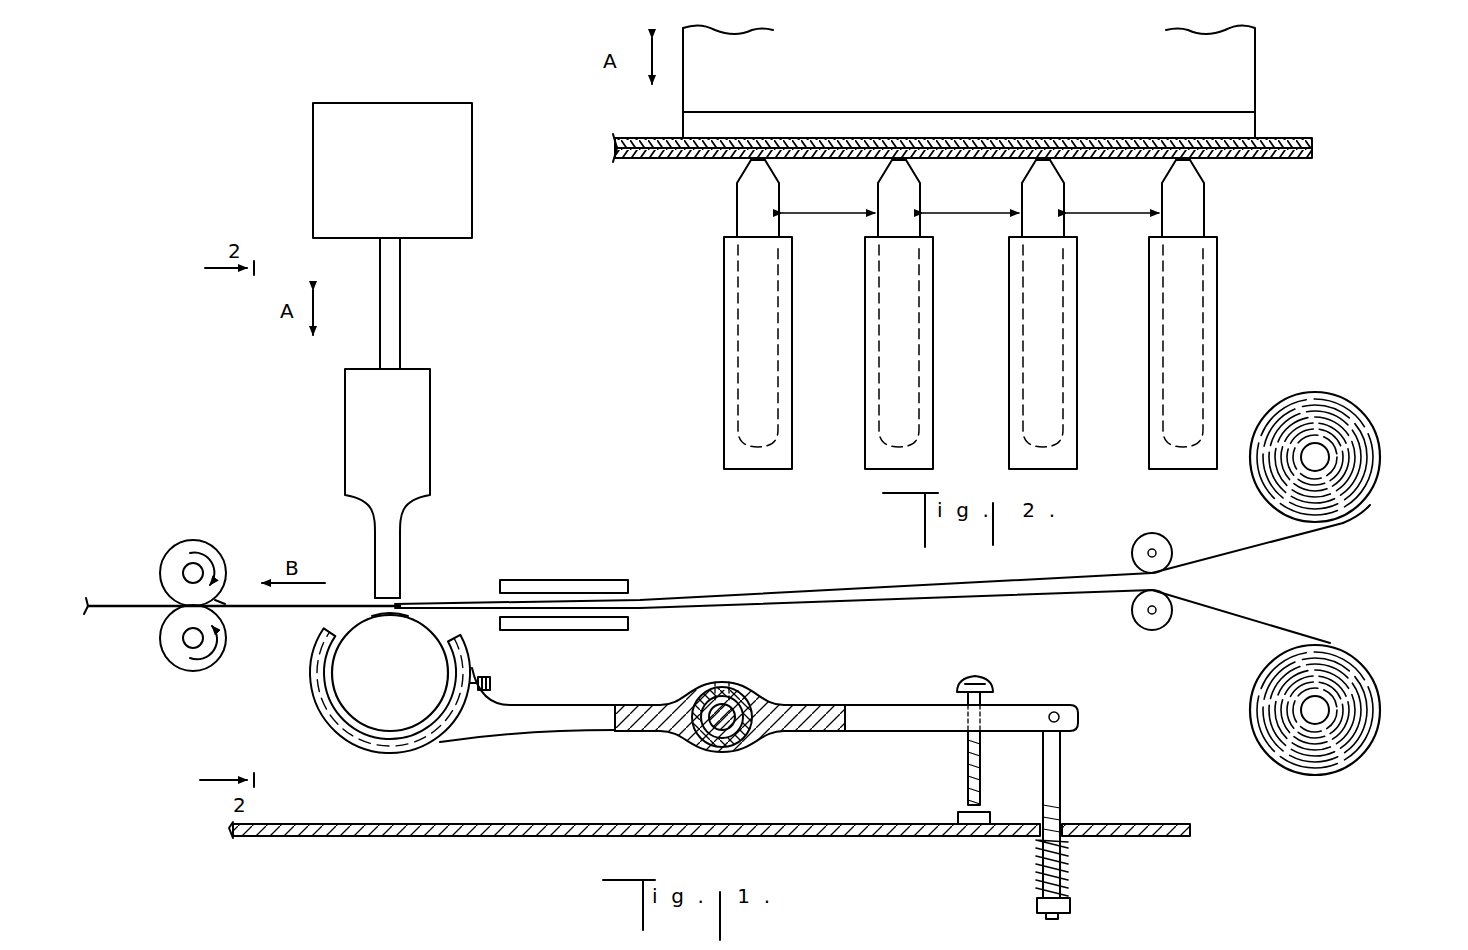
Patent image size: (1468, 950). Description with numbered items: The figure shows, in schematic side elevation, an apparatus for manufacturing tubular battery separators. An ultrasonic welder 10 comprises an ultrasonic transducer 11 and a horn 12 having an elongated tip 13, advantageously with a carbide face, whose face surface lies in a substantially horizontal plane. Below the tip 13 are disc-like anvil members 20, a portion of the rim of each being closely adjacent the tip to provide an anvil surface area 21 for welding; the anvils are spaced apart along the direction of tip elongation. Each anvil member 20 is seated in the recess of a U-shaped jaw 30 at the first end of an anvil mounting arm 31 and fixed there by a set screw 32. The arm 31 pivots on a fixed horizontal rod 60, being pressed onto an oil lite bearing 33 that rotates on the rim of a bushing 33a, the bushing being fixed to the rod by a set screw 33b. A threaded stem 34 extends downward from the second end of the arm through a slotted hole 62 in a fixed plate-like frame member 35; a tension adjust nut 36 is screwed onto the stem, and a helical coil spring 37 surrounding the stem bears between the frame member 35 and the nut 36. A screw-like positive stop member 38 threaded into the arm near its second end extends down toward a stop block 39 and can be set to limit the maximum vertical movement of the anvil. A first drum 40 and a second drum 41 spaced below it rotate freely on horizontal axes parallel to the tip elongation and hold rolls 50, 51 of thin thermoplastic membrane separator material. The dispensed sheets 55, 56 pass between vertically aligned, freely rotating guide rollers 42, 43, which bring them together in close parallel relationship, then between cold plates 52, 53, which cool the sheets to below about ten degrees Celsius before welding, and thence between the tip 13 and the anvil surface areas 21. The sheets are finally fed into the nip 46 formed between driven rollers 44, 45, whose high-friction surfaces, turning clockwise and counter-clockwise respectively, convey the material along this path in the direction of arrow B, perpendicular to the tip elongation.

In FIG. 1, the ultrasonic welder 10 is at (284, 186).
In FIG. 1, the ultrasonic transducer 11 is at (460, 214).
In FIG. 1, the horn 12 is at (417, 428).
In FIG. 2, the horn 12 is at (1243, 52).
In FIG. 1, the tip 13 is at (402, 600).
In FIG. 2, the tip 13 is at (1248, 122).
In FIG. 1, the anvil member 20 is at (352, 692).
In FIG. 2, the anvil member 20 is at (878, 197).
In FIG. 1, the anvil surface area 21 is at (390, 612).
In FIG. 2, the anvil surface area 21 is at (1181, 178).
In FIG. 1, the U-shaped jaw 30 is at (360, 737).
In FIG. 2, the U-shaped jaw 30 is at (868, 410).
In FIG. 1, the anvil mounting arm 31 is at (604, 712).
In FIG. 1, the set screw 32 is at (492, 683).
In FIG. 1, the oil lite bearing 33 is at (716, 747).
In FIG. 1, the bushing 33a is at (752, 740).
In FIG. 1, the set screw 33b is at (722, 705).
In FIG. 1, the threaded stem 34 is at (1062, 757).
In FIG. 1, the frame member 35 is at (385, 830).
In FIG. 1, the tension adjust nut 36 is at (1072, 905).
In FIG. 1, the helical coil spring 37 is at (1043, 857).
In FIG. 1, the positive stop member 38 is at (968, 755).
In FIG. 1, the stop block 39 is at (956, 812).
In FIG. 1, the first drum 40 is at (1325, 458).
In FIG. 1, the second drum 41 is at (1325, 710).
In FIG. 1, the guide roller 42 is at (1160, 547).
In FIG. 1, the guide roller 43 is at (1157, 622).
In FIG. 1, the driven roller 44 is at (195, 545).
In FIG. 1, the driven roller 45 is at (210, 665).
In FIG. 1, the nip 46 is at (228, 598).
In FIG. 1, the roll 50 is at (1345, 410).
In FIG. 1, the roll 51 is at (1350, 770).
In FIG. 1, the cold plate 52 is at (536, 578).
In FIG. 1, the cold plate 53 is at (530, 623).
In FIG. 1, the sheet 55 is at (1255, 565).
In FIG. 2, the sheet 55 is at (1295, 130).
In FIG. 1, the sheet 56 is at (1262, 648).
In FIG. 2, the sheet 56 is at (1262, 152).
In FIG. 1, the rod 60 is at (728, 722).
In FIG. 1, the slotted hole 62 is at (1066, 826).